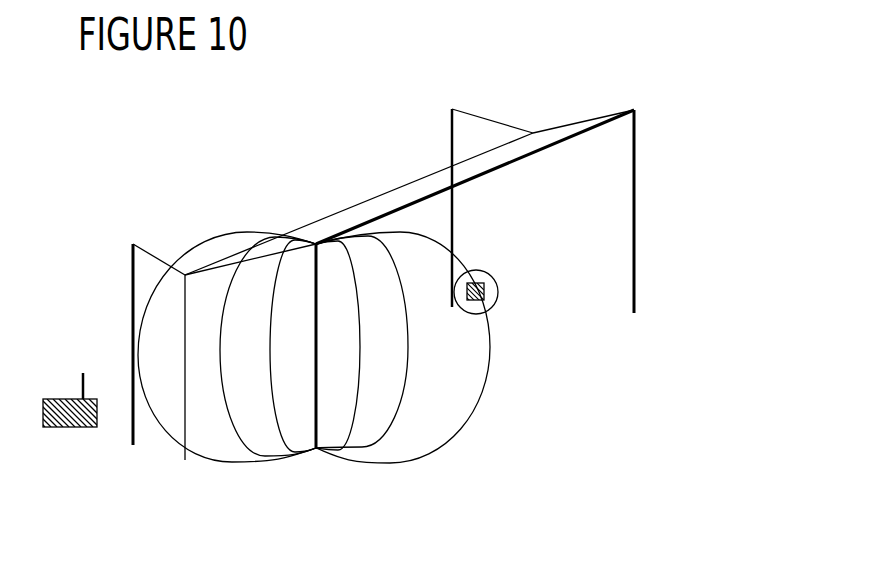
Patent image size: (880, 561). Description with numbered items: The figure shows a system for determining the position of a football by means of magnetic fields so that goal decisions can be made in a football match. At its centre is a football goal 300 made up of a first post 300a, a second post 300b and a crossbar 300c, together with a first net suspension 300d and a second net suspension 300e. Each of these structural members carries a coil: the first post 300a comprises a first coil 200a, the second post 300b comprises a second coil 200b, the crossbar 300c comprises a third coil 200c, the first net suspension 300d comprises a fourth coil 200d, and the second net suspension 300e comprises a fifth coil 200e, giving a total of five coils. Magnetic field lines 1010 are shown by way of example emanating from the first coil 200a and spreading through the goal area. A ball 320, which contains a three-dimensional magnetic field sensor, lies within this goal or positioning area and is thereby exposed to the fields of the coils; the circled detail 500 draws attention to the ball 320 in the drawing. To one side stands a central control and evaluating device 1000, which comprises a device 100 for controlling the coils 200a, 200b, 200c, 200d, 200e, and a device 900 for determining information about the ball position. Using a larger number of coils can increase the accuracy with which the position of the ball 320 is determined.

The football goal 300 is at (318, 447).
The first post 300a is at (352, 290).
The first coil 200a is at (316, 316).
The second post 300b is at (717, 211).
The second coil 200b is at (637, 177).
The crossbar 300c is at (558, 134).
The third coil 200c is at (620, 112).
The first net suspension 300d is at (110, 317).
The fourth coil 200d is at (133, 313).
The second net suspension 300e is at (537, 176).
The fifth coil 200e is at (453, 133).
The ball 320 is at (497, 277).
The detail region 500 is at (588, 303).
The central control and evaluating device 1000 is at (65, 462).
The device for controlling coils 100 is at (65, 462).
The device for determining information about the ball position 900 is at (76, 427).
The magnetic field lines 1010 is at (383, 442).